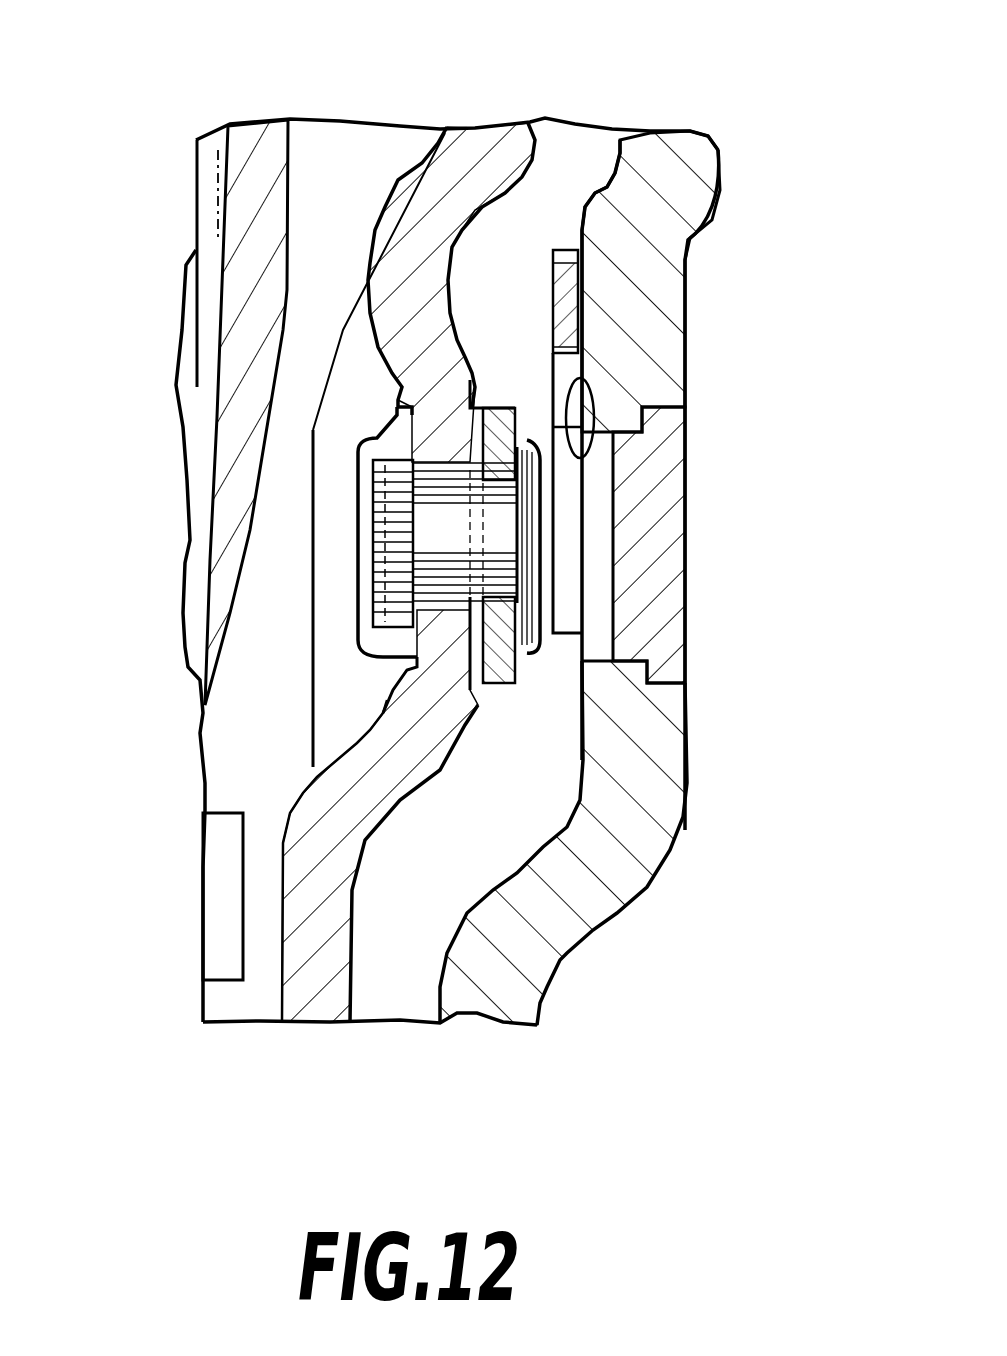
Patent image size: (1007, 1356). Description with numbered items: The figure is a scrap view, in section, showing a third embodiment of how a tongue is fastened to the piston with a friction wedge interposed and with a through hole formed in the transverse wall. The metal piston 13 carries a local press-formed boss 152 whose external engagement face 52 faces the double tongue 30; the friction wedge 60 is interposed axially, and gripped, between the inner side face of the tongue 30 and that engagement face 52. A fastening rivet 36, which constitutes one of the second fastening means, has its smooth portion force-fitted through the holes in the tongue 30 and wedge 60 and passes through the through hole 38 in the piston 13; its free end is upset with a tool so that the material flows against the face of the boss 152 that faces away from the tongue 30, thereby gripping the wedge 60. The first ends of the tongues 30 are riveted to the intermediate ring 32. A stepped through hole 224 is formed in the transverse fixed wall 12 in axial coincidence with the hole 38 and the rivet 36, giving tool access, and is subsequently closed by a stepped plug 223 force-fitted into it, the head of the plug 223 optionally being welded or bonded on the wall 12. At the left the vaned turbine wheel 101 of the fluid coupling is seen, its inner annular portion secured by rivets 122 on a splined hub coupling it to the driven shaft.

The turbine wheel 101 is at (248, 187).
The local press-formed boss 152 is at (497, 385).
The external engagement face 52 is at (492, 355).
The transverse fixed wall 12 is at (677, 172).
The intermediate ring 32 is at (582, 293).
The stepped through hole 224 is at (575, 393).
The stepped plug 223 is at (648, 472).
The fastening rivet 36 is at (548, 612).
The double tongue 30 is at (500, 712).
The friction wedge 60 is at (478, 712).
The through hole 38 is at (455, 480).
The rivets 122 is at (223, 905).
The piston 13 is at (313, 965).